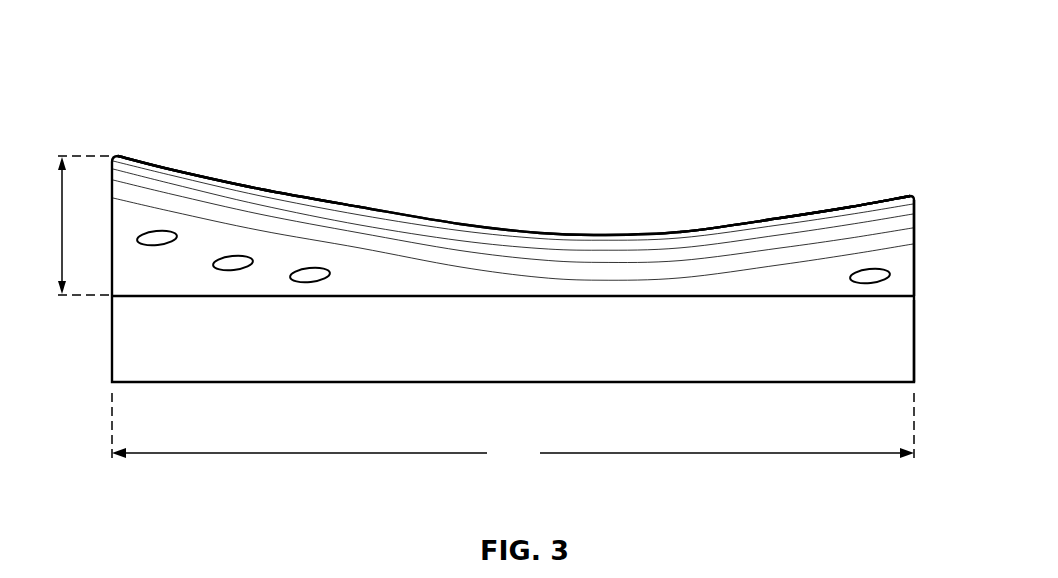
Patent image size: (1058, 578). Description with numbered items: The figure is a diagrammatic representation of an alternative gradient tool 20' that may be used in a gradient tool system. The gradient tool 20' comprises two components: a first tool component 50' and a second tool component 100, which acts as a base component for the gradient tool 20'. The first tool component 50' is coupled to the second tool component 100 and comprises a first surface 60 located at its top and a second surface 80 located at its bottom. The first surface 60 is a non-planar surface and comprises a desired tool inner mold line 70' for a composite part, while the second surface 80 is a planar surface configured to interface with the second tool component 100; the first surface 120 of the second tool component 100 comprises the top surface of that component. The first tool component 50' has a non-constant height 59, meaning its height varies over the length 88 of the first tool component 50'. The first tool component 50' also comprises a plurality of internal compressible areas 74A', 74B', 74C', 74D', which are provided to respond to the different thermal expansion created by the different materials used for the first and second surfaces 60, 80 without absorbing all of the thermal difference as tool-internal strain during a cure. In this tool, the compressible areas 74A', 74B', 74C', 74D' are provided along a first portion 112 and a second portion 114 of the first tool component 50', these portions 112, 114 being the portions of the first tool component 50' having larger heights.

The alternative gradient tool 20' is at (513, 205).
The first tool component 50' is at (845, 182).
The non-constant height H_FC 59 is at (80, 232).
The first surface 60 is at (655, 233).
The tool inner mold line 70' is at (513, 220).
The compressible area 74A' is at (177, 153).
The compressible area 74B' is at (250, 189).
The compressible area 74C' is at (323, 220).
The compressible area 74D' is at (904, 206).
The second surface 80 is at (914, 296).
The length L_FC 88 is at (499, 462).
The second tool component 100 is at (697, 383).
The first portion 112 is at (256, 88).
The second portion 114 is at (834, 155).
The first surface of second tool component 120 is at (914, 296).